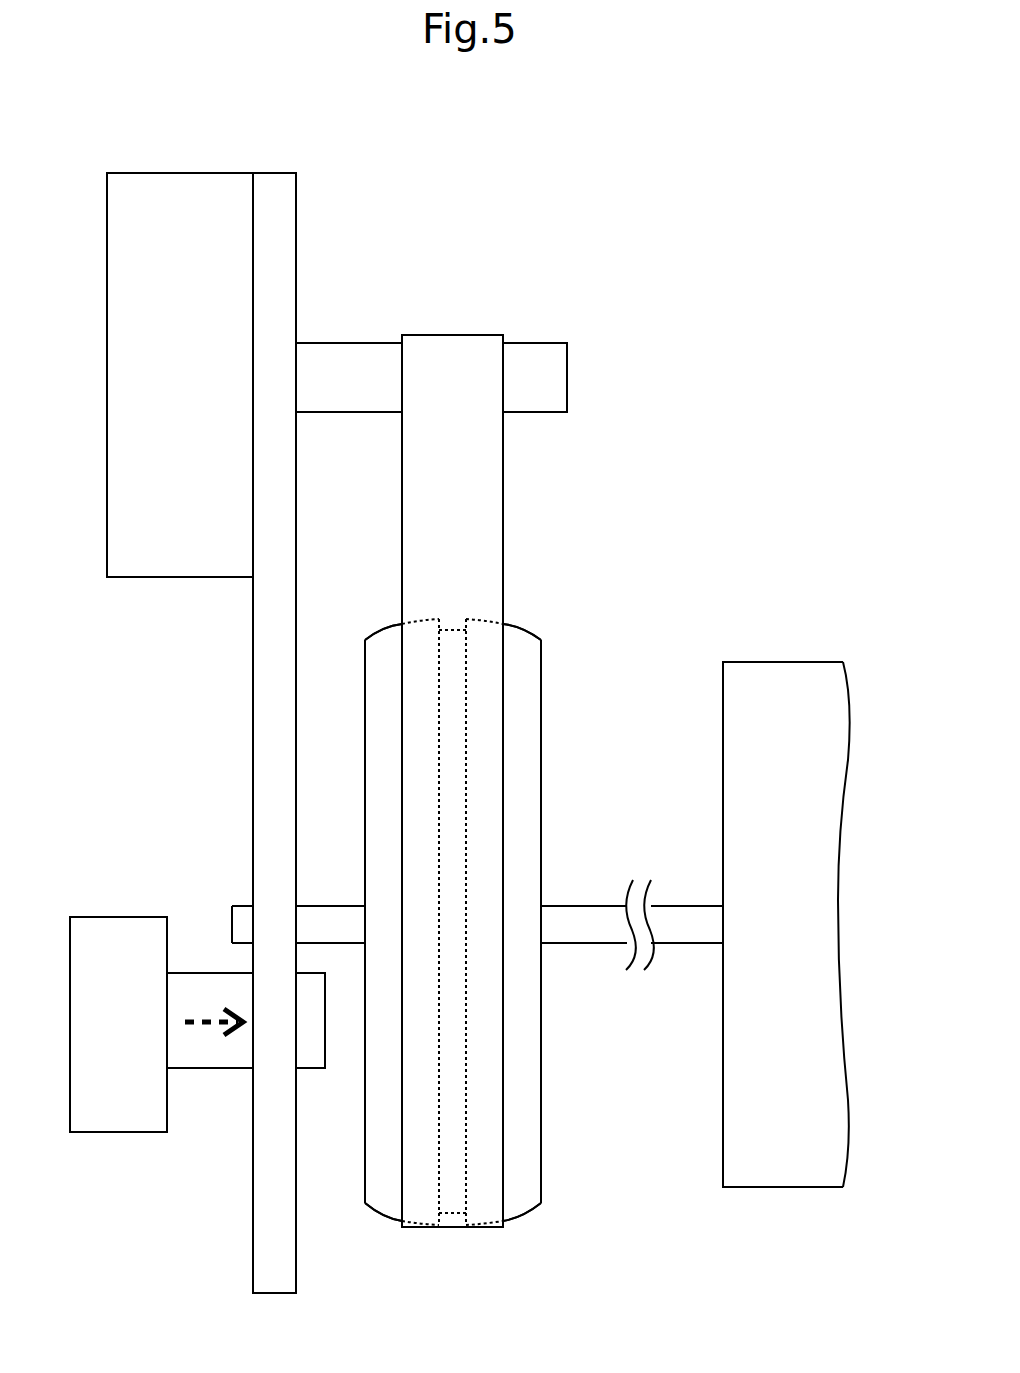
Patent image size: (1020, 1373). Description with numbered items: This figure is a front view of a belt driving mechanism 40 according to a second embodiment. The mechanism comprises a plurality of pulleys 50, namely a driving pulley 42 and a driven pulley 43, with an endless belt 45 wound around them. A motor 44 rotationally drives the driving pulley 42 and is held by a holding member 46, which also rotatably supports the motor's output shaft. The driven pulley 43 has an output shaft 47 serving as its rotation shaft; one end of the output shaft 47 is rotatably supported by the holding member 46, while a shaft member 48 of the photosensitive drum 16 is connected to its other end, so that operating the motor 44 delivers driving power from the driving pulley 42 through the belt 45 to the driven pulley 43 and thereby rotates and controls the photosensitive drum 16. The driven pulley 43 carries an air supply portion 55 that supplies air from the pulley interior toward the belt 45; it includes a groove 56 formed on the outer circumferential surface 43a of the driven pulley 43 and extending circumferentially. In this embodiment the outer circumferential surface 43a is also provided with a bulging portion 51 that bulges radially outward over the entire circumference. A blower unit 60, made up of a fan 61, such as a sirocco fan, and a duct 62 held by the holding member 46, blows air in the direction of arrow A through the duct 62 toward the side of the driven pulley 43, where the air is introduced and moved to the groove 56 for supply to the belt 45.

The photosensitive drum 16 is at (730, 1108).
The belt driving mechanism 40 is at (395, 203).
The driving pulley 42 is at (355, 346).
The driven pulley 43 is at (541, 757).
The outer circumferential surface 43a is at (523, 1056).
The motor 44 is at (177, 172).
The endless belt 45 is at (458, 338).
The holding member 46 is at (258, 694).
The output shaft 47 is at (578, 945).
The shaft member 48 is at (676, 945).
The pulleys 50 is at (482, 753).
The bulging portion 51 is at (524, 637).
The air supply portion 55 is at (551, 922).
The groove 56 is at (457, 1155).
The blower unit 60 is at (197, 1027).
The fan 61 is at (109, 923).
The duct 62 is at (193, 980).
The arrow A is at (207, 1030).